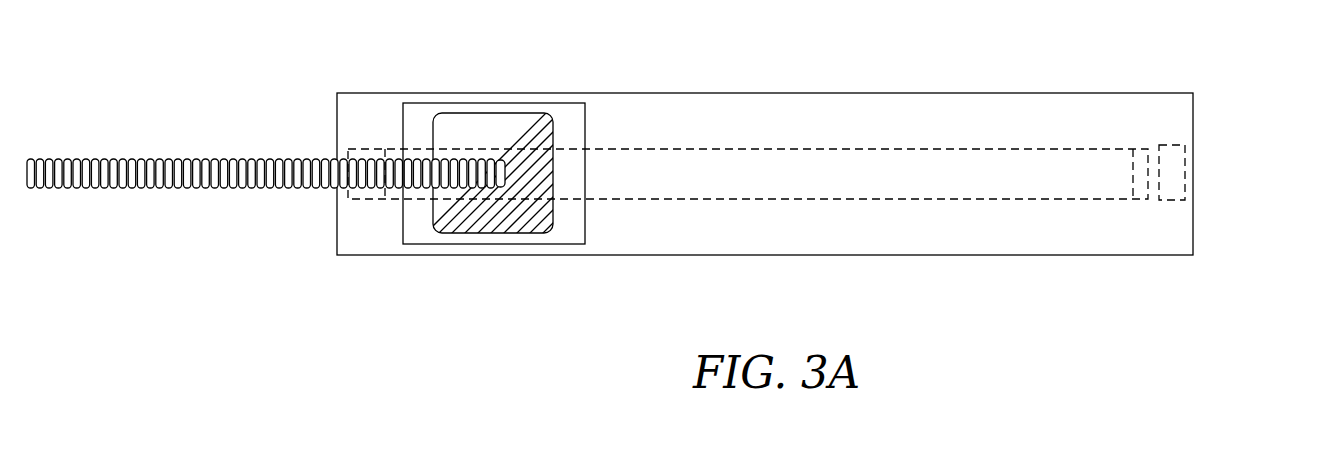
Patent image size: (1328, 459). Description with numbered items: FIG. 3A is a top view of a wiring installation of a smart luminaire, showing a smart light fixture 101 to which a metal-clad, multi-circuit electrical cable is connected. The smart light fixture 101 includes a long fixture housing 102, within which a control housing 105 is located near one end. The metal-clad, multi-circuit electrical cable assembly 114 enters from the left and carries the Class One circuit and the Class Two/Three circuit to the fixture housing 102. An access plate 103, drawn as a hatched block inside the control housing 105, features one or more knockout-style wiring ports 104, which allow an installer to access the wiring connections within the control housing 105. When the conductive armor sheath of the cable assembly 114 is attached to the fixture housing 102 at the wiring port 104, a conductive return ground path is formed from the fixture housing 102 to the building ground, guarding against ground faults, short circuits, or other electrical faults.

The smart light fixture 101 is at (670, 179).
The fixture housing 102 is at (803, 92).
The access plate 103 is at (535, 130).
The wiring port 104 is at (503, 184).
The control housing 105 is at (580, 245).
The metal-clad, multi-circuit electrical cable assembly 114 is at (261, 208).